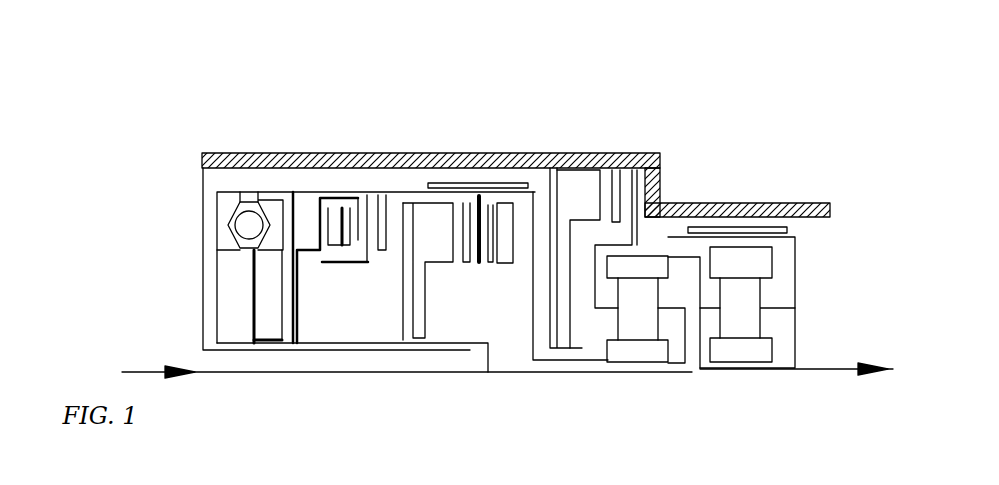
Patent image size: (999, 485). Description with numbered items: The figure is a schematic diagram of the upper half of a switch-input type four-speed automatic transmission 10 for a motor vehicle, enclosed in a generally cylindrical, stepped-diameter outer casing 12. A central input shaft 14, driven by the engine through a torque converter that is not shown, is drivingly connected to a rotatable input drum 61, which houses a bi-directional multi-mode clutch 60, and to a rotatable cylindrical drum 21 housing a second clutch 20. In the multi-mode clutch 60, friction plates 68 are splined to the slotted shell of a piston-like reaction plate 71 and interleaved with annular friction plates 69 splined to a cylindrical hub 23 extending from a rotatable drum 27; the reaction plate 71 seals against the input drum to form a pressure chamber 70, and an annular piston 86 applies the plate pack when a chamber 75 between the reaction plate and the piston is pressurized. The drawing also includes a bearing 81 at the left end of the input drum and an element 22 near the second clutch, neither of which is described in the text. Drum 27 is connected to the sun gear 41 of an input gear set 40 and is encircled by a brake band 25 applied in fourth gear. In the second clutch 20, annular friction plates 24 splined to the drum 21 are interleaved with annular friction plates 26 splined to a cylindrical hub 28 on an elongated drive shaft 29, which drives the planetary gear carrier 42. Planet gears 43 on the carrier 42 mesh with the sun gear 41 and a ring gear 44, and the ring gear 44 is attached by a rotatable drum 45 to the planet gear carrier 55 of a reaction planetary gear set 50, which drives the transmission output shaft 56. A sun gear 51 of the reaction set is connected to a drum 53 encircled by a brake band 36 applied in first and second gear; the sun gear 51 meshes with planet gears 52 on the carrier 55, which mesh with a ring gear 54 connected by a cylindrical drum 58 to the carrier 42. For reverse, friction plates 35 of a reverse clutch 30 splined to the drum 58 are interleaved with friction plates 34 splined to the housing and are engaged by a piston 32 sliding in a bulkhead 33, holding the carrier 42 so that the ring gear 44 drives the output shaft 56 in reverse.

The automatic transmission 10 is at (870, 156).
The outer casing 12 is at (245, 167).
The input shaft 14 is at (283, 373).
The second clutch 20 is at (475, 200).
The cylindrical drum 21 is at (370, 190).
The rotor bracket 22 is at (414, 180).
The cylindrical hub 23 is at (367, 262).
The annular friction plates 24 is at (492, 205).
The brake band 25 is at (458, 183).
The annular friction plates 26 is at (492, 264).
The rotatable drum 27 is at (398, 190).
The cylindrical hub 28 is at (477, 262).
The elongated drive shaft 29 is at (547, 370).
The reverse clutch 30 is at (637, 140).
The piston 32 is at (573, 188).
The bulkhead 33 is at (533, 190).
The friction plates 34 is at (614, 185).
The friction plates 35 is at (662, 168).
The brake band 36 is at (737, 237).
The input gear set 40 is at (606, 385).
The sun gear 41 is at (622, 352).
The planetary gear carrier 42 is at (688, 355).
The planet gears 43 is at (648, 325).
The ring gear 44 is at (640, 245).
The rotatable drum 45 is at (695, 350).
The reaction planetary gear set 50 is at (766, 378).
The sun gear 51 is at (730, 350).
The planet gears 52 is at (745, 296).
The drum 53 is at (797, 262).
The ring gear 54 is at (757, 258).
The planet gear carrier 55 is at (760, 312).
The transmission output shaft 56 is at (822, 372).
The cylindrical drum 58 is at (655, 263).
The bi-directional multi-mode clutch 60 is at (336, 178).
The input drum 61 is at (217, 306).
The friction plates 68 is at (352, 196).
The annular friction plates 69 is at (312, 195).
The pressure chamber 70 is at (242, 322).
The piston-like reaction plate 71 is at (258, 251).
The chamber 75 is at (275, 318).
The bearing 81 is at (250, 225).
The annular piston 86 is at (305, 210).